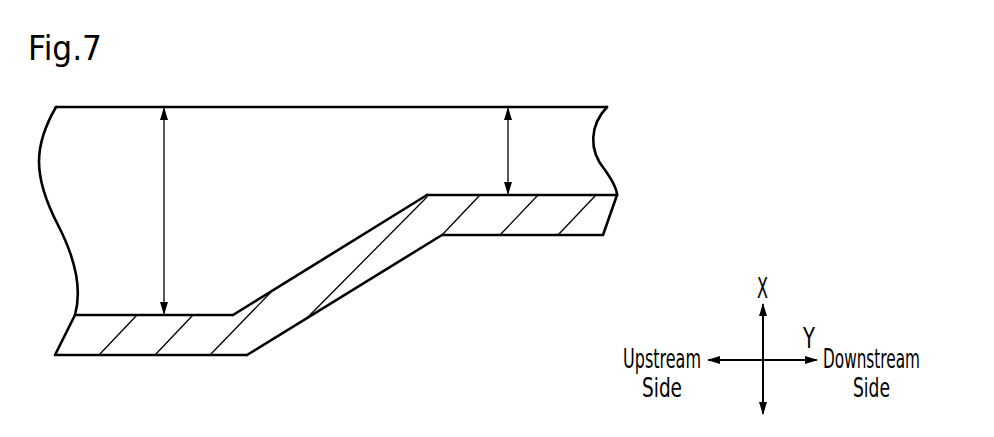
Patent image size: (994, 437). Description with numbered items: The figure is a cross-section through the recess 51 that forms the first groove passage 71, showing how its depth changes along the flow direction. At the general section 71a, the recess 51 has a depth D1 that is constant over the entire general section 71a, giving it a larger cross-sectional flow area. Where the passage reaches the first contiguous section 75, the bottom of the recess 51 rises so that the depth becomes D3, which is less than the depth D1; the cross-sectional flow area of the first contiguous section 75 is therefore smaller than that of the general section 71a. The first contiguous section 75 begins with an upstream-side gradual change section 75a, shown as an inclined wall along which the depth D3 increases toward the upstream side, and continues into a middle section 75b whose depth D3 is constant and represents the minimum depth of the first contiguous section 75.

The first contiguous section 75 is at (479, 127).
The upstream-side gradual change section 75a is at (383, 222).
The middle section 75b is at (462, 195).
The recess 51 is at (299, 268).
The first groove passage 71 is at (248, 299).
The general section 71a is at (183, 315).
The depth of recess at general section D1 is at (164, 210).
The depth of recess at first contiguous section D3 is at (508, 150).